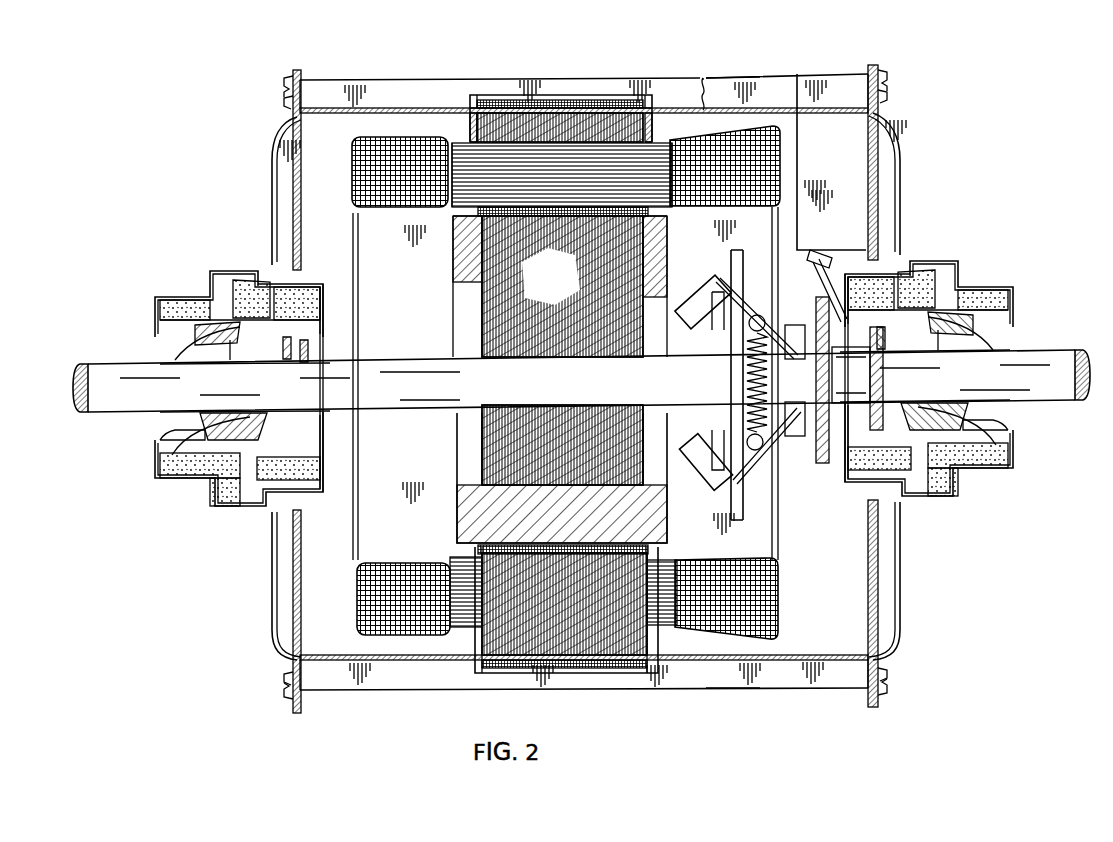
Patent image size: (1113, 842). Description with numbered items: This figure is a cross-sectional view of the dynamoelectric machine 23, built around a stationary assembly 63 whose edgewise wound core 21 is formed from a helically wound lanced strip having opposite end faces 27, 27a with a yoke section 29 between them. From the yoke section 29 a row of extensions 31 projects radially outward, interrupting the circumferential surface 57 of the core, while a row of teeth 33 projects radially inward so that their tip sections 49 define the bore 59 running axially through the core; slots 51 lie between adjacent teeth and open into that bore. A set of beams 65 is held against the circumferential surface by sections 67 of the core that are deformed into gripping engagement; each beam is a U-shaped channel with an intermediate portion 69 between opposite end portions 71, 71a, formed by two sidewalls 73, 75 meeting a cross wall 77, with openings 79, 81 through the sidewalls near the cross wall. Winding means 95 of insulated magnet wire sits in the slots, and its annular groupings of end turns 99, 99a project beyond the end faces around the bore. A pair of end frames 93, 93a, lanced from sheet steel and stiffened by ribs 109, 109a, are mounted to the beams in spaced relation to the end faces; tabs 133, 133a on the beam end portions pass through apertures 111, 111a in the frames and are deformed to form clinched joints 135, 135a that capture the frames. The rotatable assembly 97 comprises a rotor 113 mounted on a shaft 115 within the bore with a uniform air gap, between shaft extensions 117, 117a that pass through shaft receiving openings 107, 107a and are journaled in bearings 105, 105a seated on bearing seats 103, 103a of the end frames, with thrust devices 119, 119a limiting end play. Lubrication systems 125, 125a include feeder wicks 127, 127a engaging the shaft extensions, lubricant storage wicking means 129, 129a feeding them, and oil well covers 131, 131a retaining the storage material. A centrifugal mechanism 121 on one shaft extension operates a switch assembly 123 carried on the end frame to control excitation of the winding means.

The edgewise wound core 21 is at (552, 100).
The dynamoelectric machine 23 is at (968, 171).
The end face 27 is at (644, 130).
The end face 27a is at (477, 126).
The yoke section 29 is at (553, 143).
The extensions 31 is at (617, 100).
The teeth 33 is at (517, 553).
The tip sections 49 is at (563, 553).
The slots 51 is at (532, 143).
The circumferential surface 57 is at (502, 670).
The bore 59 is at (603, 553).
The stationary assembly 63 is at (629, 69).
The beams 65 is at (406, 90).
The sections 67 is at (521, 100).
The intermediate portion 69 is at (487, 90).
The end portion 71 is at (864, 73).
The end portion 71a is at (312, 90).
The sidewall 73 is at (679, 85).
The sidewall 75 is at (743, 675).
The cross wall 77 is at (700, 88).
The opening 79 is at (585, 100).
The opening 81 is at (613, 673).
The end frame 93 is at (876, 166).
The end frame 93a is at (292, 176).
The winding means 95 is at (791, 597).
The rotatable assembly 97 is at (452, 419).
The end turns 99 is at (783, 583).
The end turns 99a is at (352, 592).
The bearing seat 103 is at (975, 450).
The bearing seat 103a is at (203, 447).
The bearing 105 is at (950, 406).
The bearing 105a is at (250, 413).
The shaft receiving opening 107 is at (1017, 416).
The shaft receiving opening 107a is at (177, 421).
The ribs 109 is at (903, 557).
The ribs 109a is at (274, 573).
The apertures 111 is at (880, 652).
The apertures 111a is at (297, 652).
The rotor 113 is at (537, 285).
The shaft 115 is at (537, 387).
The shaft extension 117 is at (1073, 365).
The shaft extension 117a is at (93, 370).
The thrust device 119 is at (878, 380).
The thrust device 119a is at (305, 351).
The centrifugal mechanism 121 is at (696, 281).
The switch assembly 123 is at (814, 166).
The lubrication system 125 is at (959, 371).
The lubrication system 125a is at (224, 379).
The feeder wick 127 is at (935, 275).
The feeder wick 127a is at (234, 277).
The lubricant storage wicking means 129 is at (1007, 454).
The lubricant storage wicking means 129a is at (167, 460).
The oil well cover 131 is at (1017, 291).
The oil well cover 131a is at (156, 305).
The tabs 133 is at (881, 96).
The tabs 133a is at (291, 104).
The clinched joints 135 is at (880, 74).
The clinched joints 135a is at (292, 78).